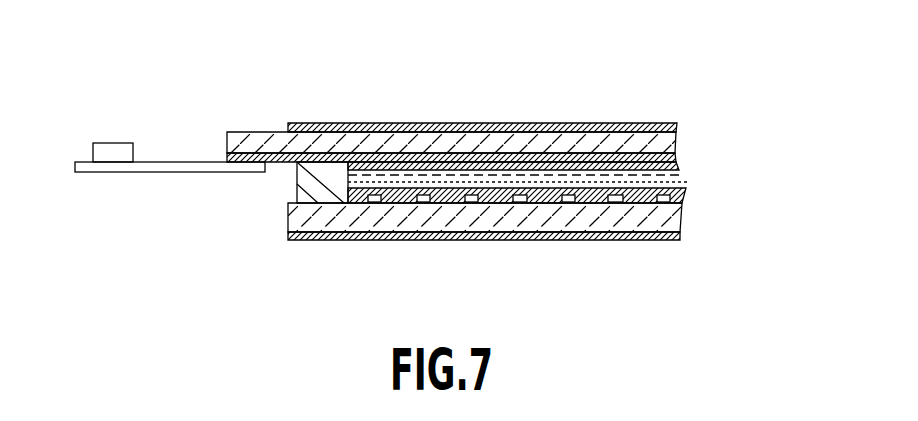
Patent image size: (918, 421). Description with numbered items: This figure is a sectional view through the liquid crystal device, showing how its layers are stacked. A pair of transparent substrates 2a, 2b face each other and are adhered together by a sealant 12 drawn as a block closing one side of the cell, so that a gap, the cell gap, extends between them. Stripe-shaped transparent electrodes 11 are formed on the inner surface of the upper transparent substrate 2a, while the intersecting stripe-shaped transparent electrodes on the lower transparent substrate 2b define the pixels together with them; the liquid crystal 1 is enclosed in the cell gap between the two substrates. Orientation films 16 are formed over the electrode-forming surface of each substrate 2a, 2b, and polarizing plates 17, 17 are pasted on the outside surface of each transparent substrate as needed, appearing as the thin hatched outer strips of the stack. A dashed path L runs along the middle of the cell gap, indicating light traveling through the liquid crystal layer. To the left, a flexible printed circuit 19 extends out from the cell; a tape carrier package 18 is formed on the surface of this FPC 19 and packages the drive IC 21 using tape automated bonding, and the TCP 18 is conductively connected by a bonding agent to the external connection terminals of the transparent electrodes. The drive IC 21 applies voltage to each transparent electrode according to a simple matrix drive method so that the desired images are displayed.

The transparent electrodes 1 is at (488, 182).
The transparent substrate 2a is at (665, 145).
The transparent substrate 2b is at (678, 220).
The transparent electrodes 11 is at (462, 165).
The sealing member 12 is at (300, 182).
The orientation films 16 is at (545, 180).
The polarizing plates 17 is at (333, 123).
The tape carrier package 18 is at (170, 103).
The flexible printed circuit 19 is at (180, 158).
The drive IC 21 is at (113, 123).
The light L is at (688, 182).